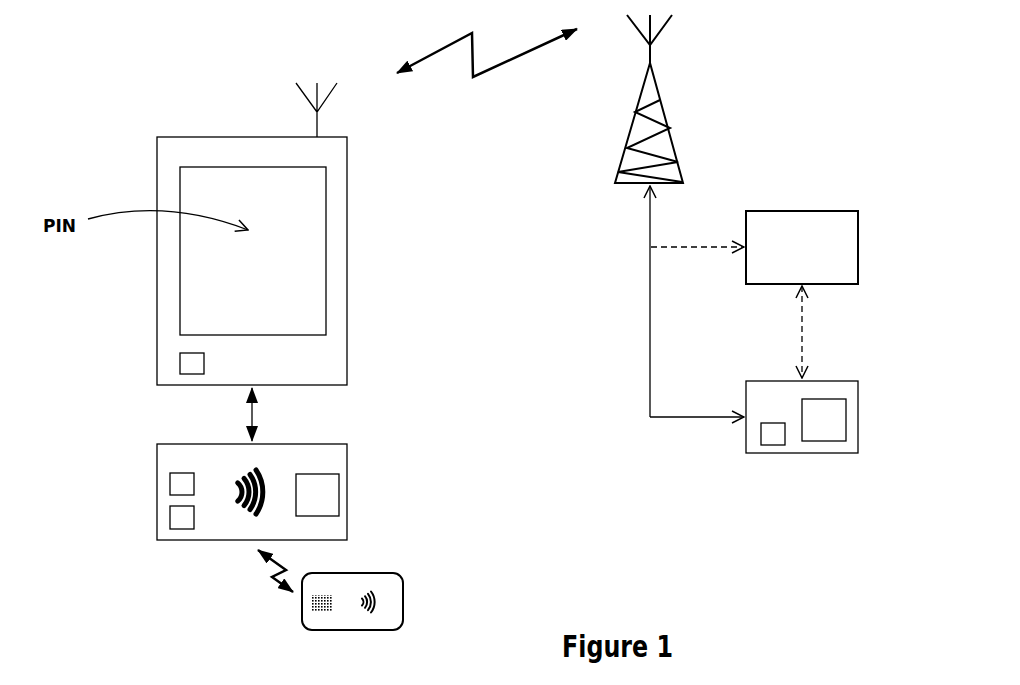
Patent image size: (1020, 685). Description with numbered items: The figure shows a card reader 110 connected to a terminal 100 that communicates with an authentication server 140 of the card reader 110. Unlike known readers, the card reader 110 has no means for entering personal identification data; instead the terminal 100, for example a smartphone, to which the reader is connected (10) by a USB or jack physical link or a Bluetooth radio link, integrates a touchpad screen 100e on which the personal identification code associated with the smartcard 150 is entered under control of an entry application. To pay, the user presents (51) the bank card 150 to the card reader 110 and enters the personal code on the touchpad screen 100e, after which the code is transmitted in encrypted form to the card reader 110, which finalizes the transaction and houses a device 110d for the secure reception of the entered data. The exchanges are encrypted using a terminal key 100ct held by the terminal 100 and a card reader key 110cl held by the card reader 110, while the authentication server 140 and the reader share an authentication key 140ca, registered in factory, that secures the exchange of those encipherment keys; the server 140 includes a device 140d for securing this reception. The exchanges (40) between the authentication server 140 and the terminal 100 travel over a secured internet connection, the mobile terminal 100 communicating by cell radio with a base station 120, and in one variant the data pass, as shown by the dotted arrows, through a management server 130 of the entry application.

The terminal 100 is at (347, 262).
The touchpad screen 100e is at (208, 167).
The terminal key 100ct is at (179, 363).
The connection 10 is at (257, 415).
The card reader 110 is at (198, 542).
The card reader key 110cl is at (170, 483).
The authentication key 140ca is at (170, 515).
The device for secure reception 110d is at (339, 487).
The presentation of the card 51 is at (273, 582).
The smartcard 150 is at (403, 583).
The exchanges 40 is at (512, 62).
The base station 120 is at (662, 95).
The management server 130 is at (802, 247).
The authentication server 140 is at (745, 437).
The device for securing reception 140d is at (846, 414).